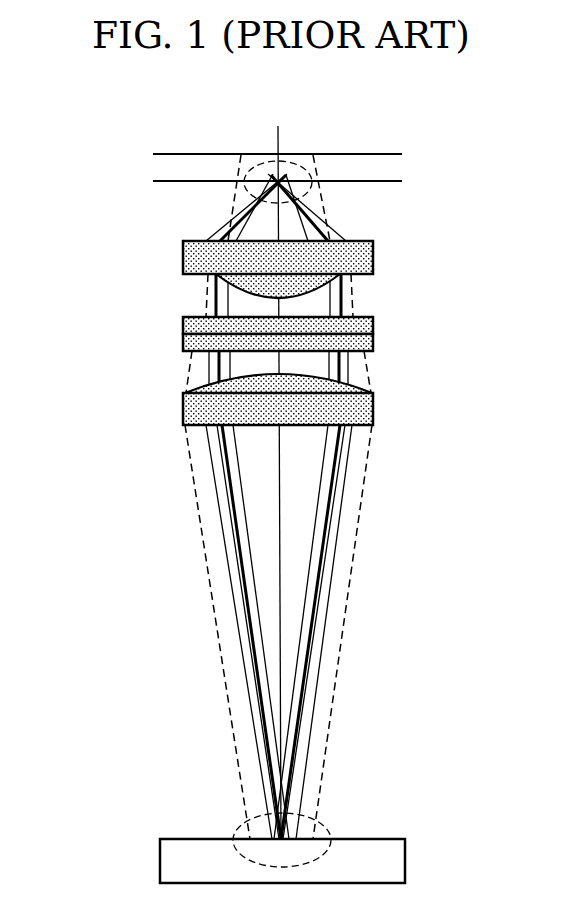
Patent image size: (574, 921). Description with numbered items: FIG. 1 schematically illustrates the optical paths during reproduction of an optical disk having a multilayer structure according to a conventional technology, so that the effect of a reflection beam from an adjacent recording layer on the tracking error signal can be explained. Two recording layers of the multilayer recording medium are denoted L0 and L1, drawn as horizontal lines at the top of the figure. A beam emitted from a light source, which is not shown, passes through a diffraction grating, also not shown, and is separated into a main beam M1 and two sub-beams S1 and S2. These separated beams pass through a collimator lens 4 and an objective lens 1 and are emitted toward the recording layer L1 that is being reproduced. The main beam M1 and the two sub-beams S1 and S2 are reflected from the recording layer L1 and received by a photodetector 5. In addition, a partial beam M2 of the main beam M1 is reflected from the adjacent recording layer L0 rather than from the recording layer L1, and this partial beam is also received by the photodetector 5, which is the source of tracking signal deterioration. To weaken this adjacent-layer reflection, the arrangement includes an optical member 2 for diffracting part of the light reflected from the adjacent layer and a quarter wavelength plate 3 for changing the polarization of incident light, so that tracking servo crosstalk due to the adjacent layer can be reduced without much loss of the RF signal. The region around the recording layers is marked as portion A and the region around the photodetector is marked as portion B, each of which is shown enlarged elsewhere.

The objective lens 1 is at (373, 260).
The optical member 2 is at (373, 325).
The ¼ wavelength plate 3 is at (373, 342).
The collimator lens 4 is at (373, 410).
The photodetector 5 is at (390, 854).
The portion A is at (278, 162).
The portion B is at (327, 828).
The recording layer L0 is at (294, 156).
The recording layer L1 is at (294, 183).
The sub-beam S1 is at (307, 576).
The sub-beam S2 is at (245, 508).
The main beam M1 is at (257, 660).
The partial beam M2 is at (242, 774).